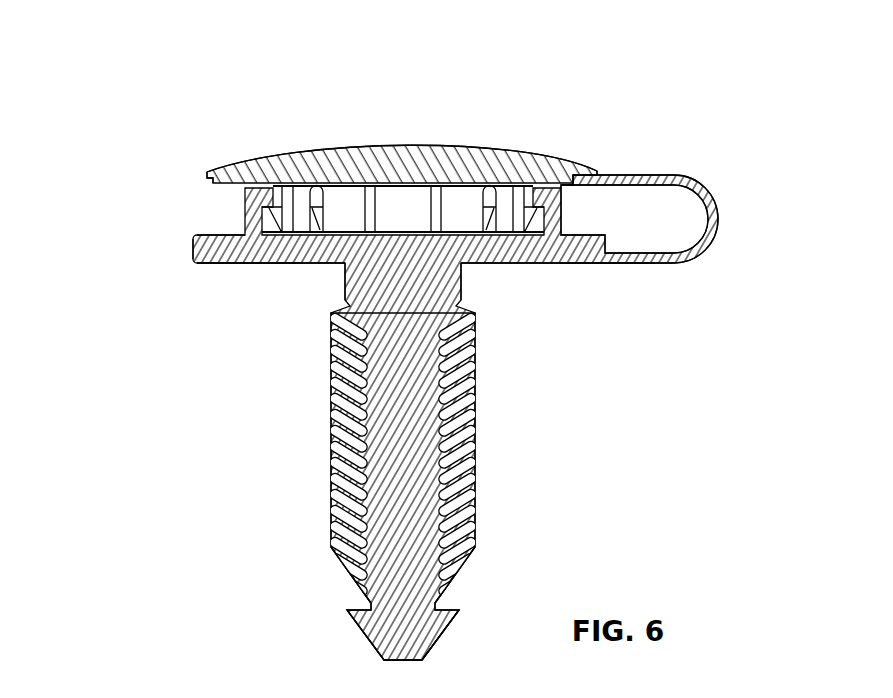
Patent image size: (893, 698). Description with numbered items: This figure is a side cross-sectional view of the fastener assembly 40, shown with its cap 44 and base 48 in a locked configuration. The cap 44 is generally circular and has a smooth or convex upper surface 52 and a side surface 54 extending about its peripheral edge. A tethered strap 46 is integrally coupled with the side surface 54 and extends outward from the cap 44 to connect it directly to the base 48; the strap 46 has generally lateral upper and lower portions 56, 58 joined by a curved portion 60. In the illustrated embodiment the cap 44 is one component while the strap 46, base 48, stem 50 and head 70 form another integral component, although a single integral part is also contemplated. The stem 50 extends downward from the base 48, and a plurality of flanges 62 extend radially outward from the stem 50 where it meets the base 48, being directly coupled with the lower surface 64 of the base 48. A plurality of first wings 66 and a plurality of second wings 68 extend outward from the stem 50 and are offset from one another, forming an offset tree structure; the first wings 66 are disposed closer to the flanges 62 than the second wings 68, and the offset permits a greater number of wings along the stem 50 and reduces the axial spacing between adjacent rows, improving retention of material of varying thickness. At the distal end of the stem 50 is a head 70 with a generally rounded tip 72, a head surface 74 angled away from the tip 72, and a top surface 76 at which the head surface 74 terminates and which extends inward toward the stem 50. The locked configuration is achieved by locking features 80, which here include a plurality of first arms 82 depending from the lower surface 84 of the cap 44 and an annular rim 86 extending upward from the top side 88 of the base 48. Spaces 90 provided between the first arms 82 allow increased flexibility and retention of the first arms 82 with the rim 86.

The fastener assembly 40 is at (120, 50).
The cap 44 is at (267, 155).
The tethered strap 46 is at (718, 213).
The base 48 is at (193, 252).
The stem 50 is at (399, 486).
The upper surface 52 is at (252, 160).
The side surface 54 is at (212, 181).
The upper portion 56 is at (656, 176).
The lower portion 58 is at (653, 266).
The curved portion 60 is at (713, 241).
The flanges 62 is at (345, 290).
The lower surface 64 is at (243, 264).
The first wings 66 is at (328, 502).
The second wings 68 is at (475, 555).
The head 70 is at (372, 630).
The tip 72 is at (404, 661).
The head surface 74 is at (441, 642).
The top surface 76 is at (371, 599).
The locking features 80 is at (226, 217).
The first arms 82 is at (318, 180).
The lower surface 84 is at (594, 176).
The annular rim 86 is at (563, 210).
The top side 88 is at (583, 232).
The spaces 90 is at (303, 207).